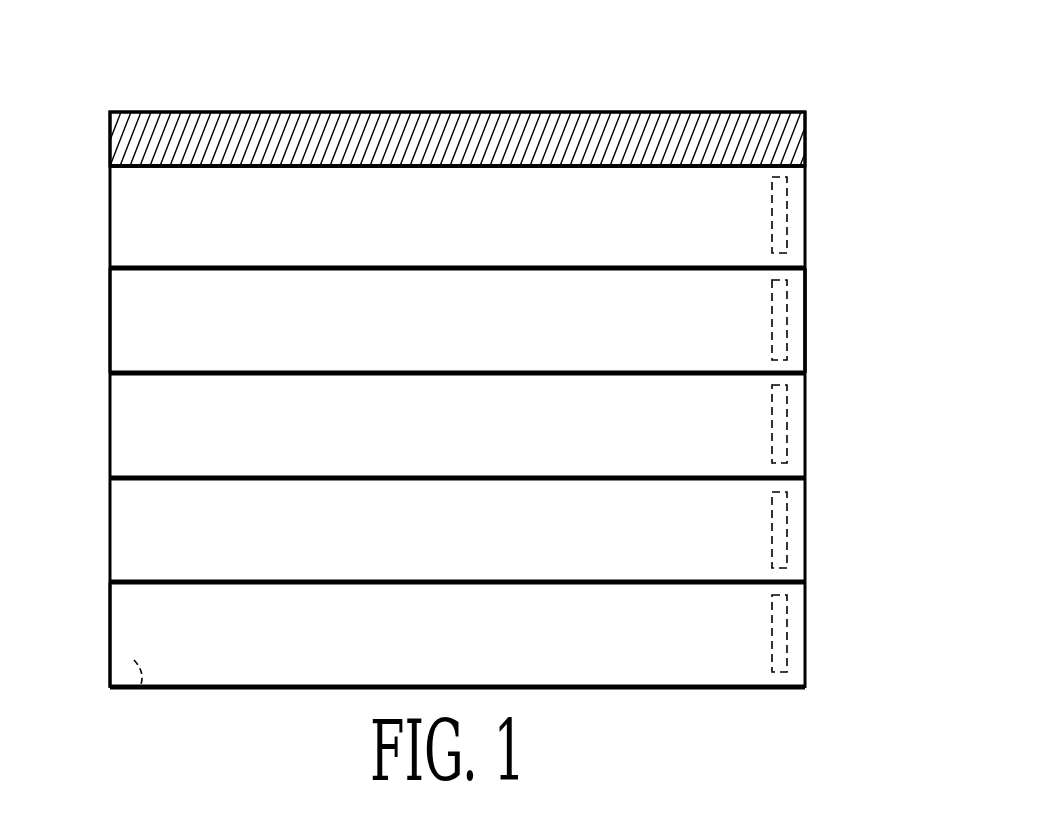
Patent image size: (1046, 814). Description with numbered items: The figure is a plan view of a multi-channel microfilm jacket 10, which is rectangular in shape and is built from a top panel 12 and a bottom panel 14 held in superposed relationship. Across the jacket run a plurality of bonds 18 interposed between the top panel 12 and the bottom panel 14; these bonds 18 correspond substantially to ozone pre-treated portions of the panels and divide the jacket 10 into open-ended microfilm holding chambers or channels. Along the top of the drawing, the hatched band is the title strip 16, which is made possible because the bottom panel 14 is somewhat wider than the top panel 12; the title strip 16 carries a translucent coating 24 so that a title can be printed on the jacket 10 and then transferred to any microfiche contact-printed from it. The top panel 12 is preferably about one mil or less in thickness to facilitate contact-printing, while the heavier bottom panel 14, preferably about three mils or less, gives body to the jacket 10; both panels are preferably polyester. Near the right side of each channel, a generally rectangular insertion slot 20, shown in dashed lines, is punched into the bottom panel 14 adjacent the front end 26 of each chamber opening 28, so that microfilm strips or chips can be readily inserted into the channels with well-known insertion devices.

The microfilm jacket 10 is at (794, 86).
The top panel 12 is at (143, 633).
The bottom panel 14 is at (137, 691).
The title strip 16 is at (613, 112).
The bonds 18 is at (490, 168).
The microfilm strip or chip insertion slots 20 is at (777, 218).
The translucent coating 24 is at (473, 136).
The front end 26 is at (818, 282).
The chamber opening 28 is at (108, 333).